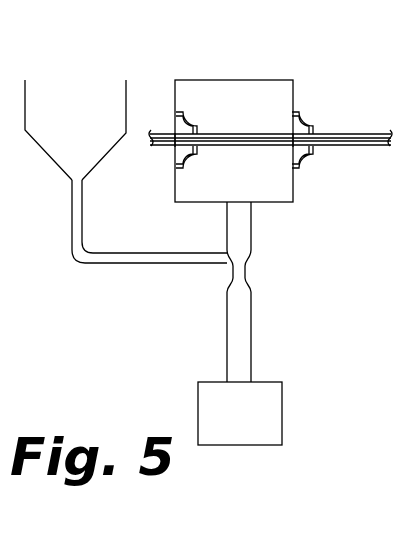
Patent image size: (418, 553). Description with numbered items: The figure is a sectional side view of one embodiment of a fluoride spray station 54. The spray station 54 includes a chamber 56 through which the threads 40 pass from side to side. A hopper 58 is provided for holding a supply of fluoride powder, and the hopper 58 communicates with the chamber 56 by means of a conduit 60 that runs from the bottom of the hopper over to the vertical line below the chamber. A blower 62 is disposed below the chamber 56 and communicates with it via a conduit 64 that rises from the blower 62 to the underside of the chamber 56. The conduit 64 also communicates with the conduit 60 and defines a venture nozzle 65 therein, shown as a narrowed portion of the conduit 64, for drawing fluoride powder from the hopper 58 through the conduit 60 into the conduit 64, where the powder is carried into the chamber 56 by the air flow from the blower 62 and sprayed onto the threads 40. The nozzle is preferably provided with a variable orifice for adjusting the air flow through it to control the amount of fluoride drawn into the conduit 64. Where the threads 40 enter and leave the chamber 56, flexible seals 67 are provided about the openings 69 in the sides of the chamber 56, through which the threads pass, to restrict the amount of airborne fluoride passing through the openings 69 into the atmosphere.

The spray station 54 is at (335, 73).
The chamber 56 is at (215, 80).
The hopper 58 is at (128, 100).
The threads 40 is at (243, 135).
The flexible seals 67 is at (187, 123).
The openings 69 is at (173, 135).
The conduit 60 is at (135, 252).
The conduit 64 is at (252, 337).
The venture nozzle 65 is at (248, 278).
The blower 62 is at (283, 400).